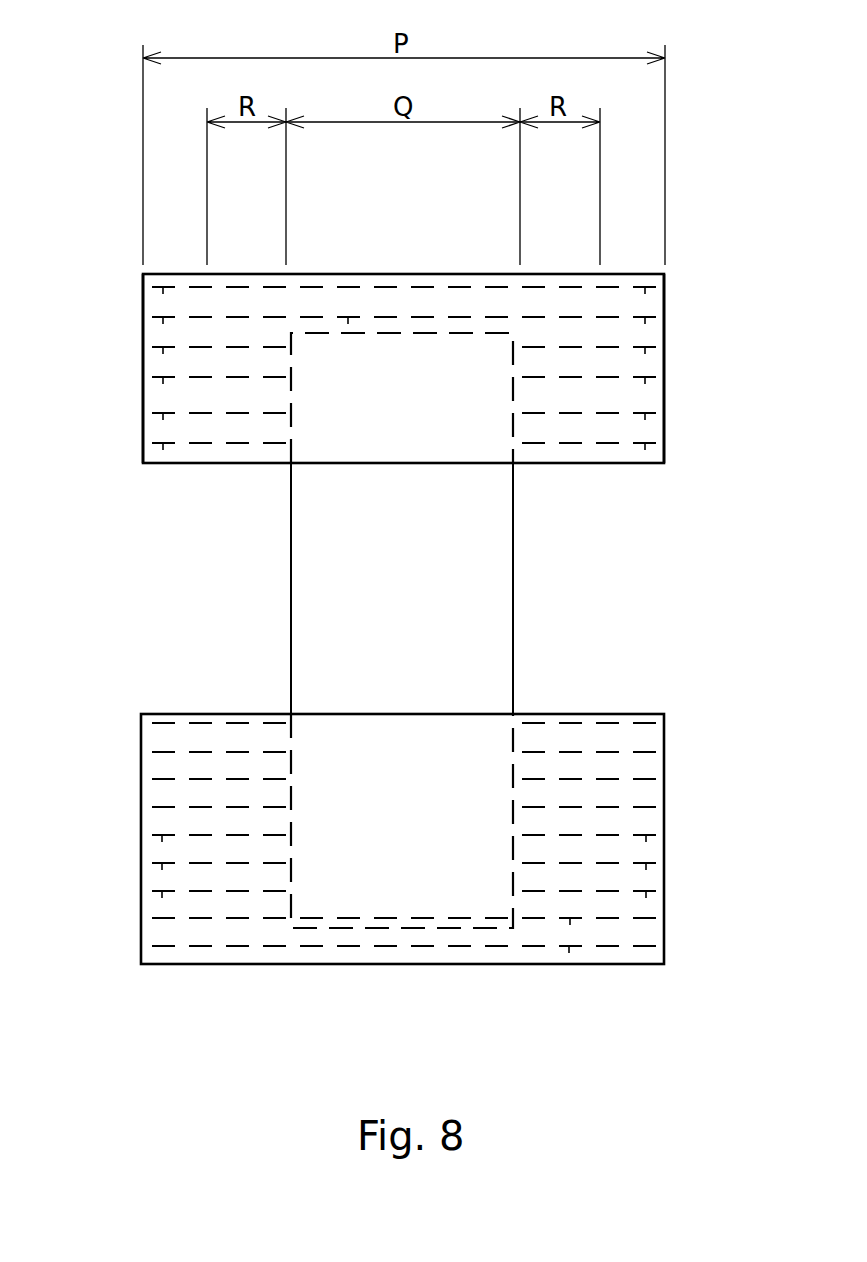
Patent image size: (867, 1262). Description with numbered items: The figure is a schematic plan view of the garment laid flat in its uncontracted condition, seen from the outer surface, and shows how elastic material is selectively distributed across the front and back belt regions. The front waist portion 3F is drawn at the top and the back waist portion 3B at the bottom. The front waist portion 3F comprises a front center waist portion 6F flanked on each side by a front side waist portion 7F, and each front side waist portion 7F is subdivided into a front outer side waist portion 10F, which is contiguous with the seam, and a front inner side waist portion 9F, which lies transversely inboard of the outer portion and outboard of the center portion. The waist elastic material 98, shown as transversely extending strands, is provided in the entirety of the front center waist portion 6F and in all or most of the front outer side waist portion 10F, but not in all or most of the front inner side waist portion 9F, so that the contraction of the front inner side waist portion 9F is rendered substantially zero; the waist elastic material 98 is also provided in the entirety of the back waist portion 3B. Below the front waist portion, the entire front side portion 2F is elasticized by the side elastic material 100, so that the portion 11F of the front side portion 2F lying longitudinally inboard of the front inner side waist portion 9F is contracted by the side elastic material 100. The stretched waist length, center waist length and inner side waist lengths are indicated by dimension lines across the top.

The front waist portion 3F is at (386, 274).
The back waist portion 3B is at (349, 965).
The front center waist portion 6F is at (443, 276).
The front side portion 2F is at (165, 391).
The front side waist portion 7F is at (188, 280).
The front inner side waist portion 9F is at (229, 310).
The front outer side waist portion 10F is at (172, 302).
The portion of the front side portion 11F is at (232, 362).
The waist elastic material 98 is at (160, 322).
The side elastic material 100 is at (160, 381).